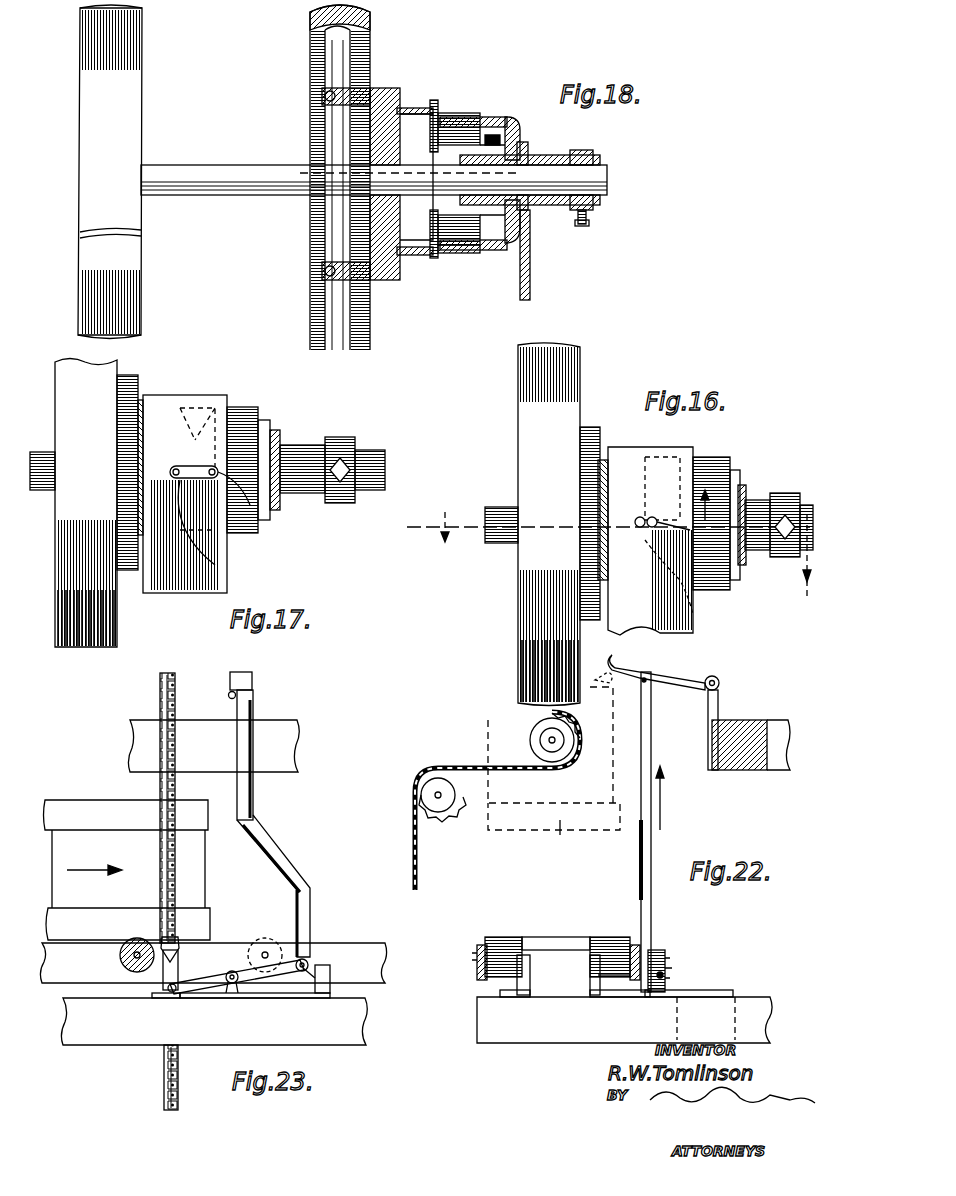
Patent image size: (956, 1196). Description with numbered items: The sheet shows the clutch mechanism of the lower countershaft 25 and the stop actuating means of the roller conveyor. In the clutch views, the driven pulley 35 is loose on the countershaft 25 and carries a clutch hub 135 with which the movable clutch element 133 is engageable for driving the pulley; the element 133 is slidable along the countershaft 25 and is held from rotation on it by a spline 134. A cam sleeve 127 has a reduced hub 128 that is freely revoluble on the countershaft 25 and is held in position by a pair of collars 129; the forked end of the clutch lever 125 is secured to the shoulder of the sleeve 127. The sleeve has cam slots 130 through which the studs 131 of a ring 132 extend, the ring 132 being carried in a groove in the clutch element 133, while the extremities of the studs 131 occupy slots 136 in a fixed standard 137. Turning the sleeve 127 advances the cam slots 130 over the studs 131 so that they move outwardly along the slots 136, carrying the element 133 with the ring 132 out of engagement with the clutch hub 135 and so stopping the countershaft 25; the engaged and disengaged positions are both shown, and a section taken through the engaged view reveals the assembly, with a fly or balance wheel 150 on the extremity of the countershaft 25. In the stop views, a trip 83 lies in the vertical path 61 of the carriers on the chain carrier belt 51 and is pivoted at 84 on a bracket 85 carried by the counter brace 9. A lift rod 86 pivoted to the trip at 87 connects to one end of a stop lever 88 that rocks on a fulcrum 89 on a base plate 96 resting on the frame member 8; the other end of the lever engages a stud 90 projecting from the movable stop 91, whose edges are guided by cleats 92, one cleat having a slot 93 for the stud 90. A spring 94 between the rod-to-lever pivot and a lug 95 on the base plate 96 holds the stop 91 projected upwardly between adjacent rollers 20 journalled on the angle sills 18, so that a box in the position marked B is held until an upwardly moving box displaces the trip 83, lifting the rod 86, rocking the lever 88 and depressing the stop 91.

In FIG. 18, the fly or balance wheel 150 is at (130, 145).
In FIG. 18, the pulley 35 is at (372, 42).
In FIG. 17, the pulley 35 is at (70, 375).
In FIG. 16, the pulley 35 is at (558, 405).
In FIG. 18, the clutch hub 135 is at (395, 108).
In FIG. 17, the clutch hub 135 is at (125, 392).
In FIG. 16, the clutch hub 135 is at (600, 470).
In FIG. 18, the fixed standard 137 is at (410, 256).
In FIG. 17, the fixed standard 137 is at (165, 405).
In FIG. 16, the fixed standard 137 is at (615, 620).
In FIG. 18, the studs 131 is at (440, 110).
In FIG. 17, the studs 131 is at (262, 525).
In FIG. 16, the studs 131 is at (690, 630).
In FIG. 18, the ring 132 is at (455, 115).
In FIG. 18, the slots 136 is at (500, 118).
In FIG. 17, the slots 136 is at (215, 565).
In FIG. 16, the slots 136 is at (712, 570).
In FIG. 18, the movable clutch element 133 is at (505, 140).
In FIG. 18, the cam sleeve 127 is at (497, 127).
In FIG. 17, the cam sleeve 127 is at (255, 418).
In FIG. 16, the cam sleeve 127 is at (720, 470).
In FIG. 18, the spline 134 is at (520, 140).
In FIG. 18, the lower countershaft 25 is at (607, 180).
In FIG. 17, the lower countershaft 25 is at (375, 470).
In FIG. 16, the lower countershaft 25 is at (495, 515).
In FIG. 18, the collars 129 is at (595, 205).
In FIG. 17, the collars 129 is at (345, 455).
In FIG. 16, the collars 129 is at (788, 510).
In FIG. 18, the reduced hub 128 is at (548, 205).
In FIG. 17, the reduced hub 128 is at (302, 455).
In FIG. 16, the reduced hub 128 is at (760, 500).
In FIG. 18, the clutch lever 125 is at (530, 290).
In FIG. 18, the cam slots 130 is at (455, 245).
In FIG. 17, the cam slots 130 is at (218, 402).
In FIG. 16, the cam slots 130 is at (690, 608).
In FIG. 16, the angle sills 18 is at (612, 566).
In FIG. 22, the angle sills 18 is at (477, 967).
In FIG. 23, the angle sills 18 is at (355, 943).
In FIG. 22, the trip 83 is at (645, 662).
In FIG. 23, the trip 83 is at (252, 678).
In FIG. 22, the pivot 84 is at (720, 680).
In FIG. 23, the pivot 84 is at (229, 693).
In FIG. 22, the bracket 85 is at (718, 705).
In FIG. 23, the bracket 85 is at (253, 708).
In FIG. 22, the counter brace 9 is at (762, 730).
In FIG. 23, the counter brace 9 is at (293, 735).
In FIG. 22, the lift rod 86 is at (652, 858).
In FIG. 23, the lift rod 86 is at (268, 845).
In FIG. 22, the pivot 87 is at (652, 683).
In FIG. 22, the vertical path 61 is at (498, 743).
In FIG. 23, the vertical path 61 is at (169, 891).
In FIG. 22, the chain carrier belt 51 is at (418, 790).
In FIG. 22, the box B is at (554, 775).
In FIG. 23, the box B is at (72, 812).
In FIG. 22, the rollers 20 is at (500, 937).
In FIG. 23, the rollers 20 is at (118, 958).
In FIG. 22, the movable stop 91 is at (548, 935).
In FIG. 23, the movable stop 91 is at (166, 944).
In FIG. 22, the stop lever 88 is at (665, 965).
In FIG. 23, the stop lever 88 is at (262, 975).
In FIG. 22, the spring 94 is at (665, 975).
In FIG. 23, the spring 94 is at (308, 962).
In FIG. 22, the base plate 96 is at (715, 990).
In FIG. 23, the base plate 96 is at (282, 998).
In FIG. 22, the cleats 92 is at (522, 990).
In FIG. 23, the cleats 92 is at (165, 966).
In FIG. 22, the stud 90 is at (625, 997).
In FIG. 23, the stud 90 is at (175, 993).
In FIG. 22, the base 8 is at (665, 1025).
In FIG. 23, the base 8 is at (214, 1021).
In FIG. 23, the fulcrum 89 is at (229, 986).
In FIG. 23, the slot 93 is at (170, 985).
In FIG. 23, the lug 95 is at (325, 993).